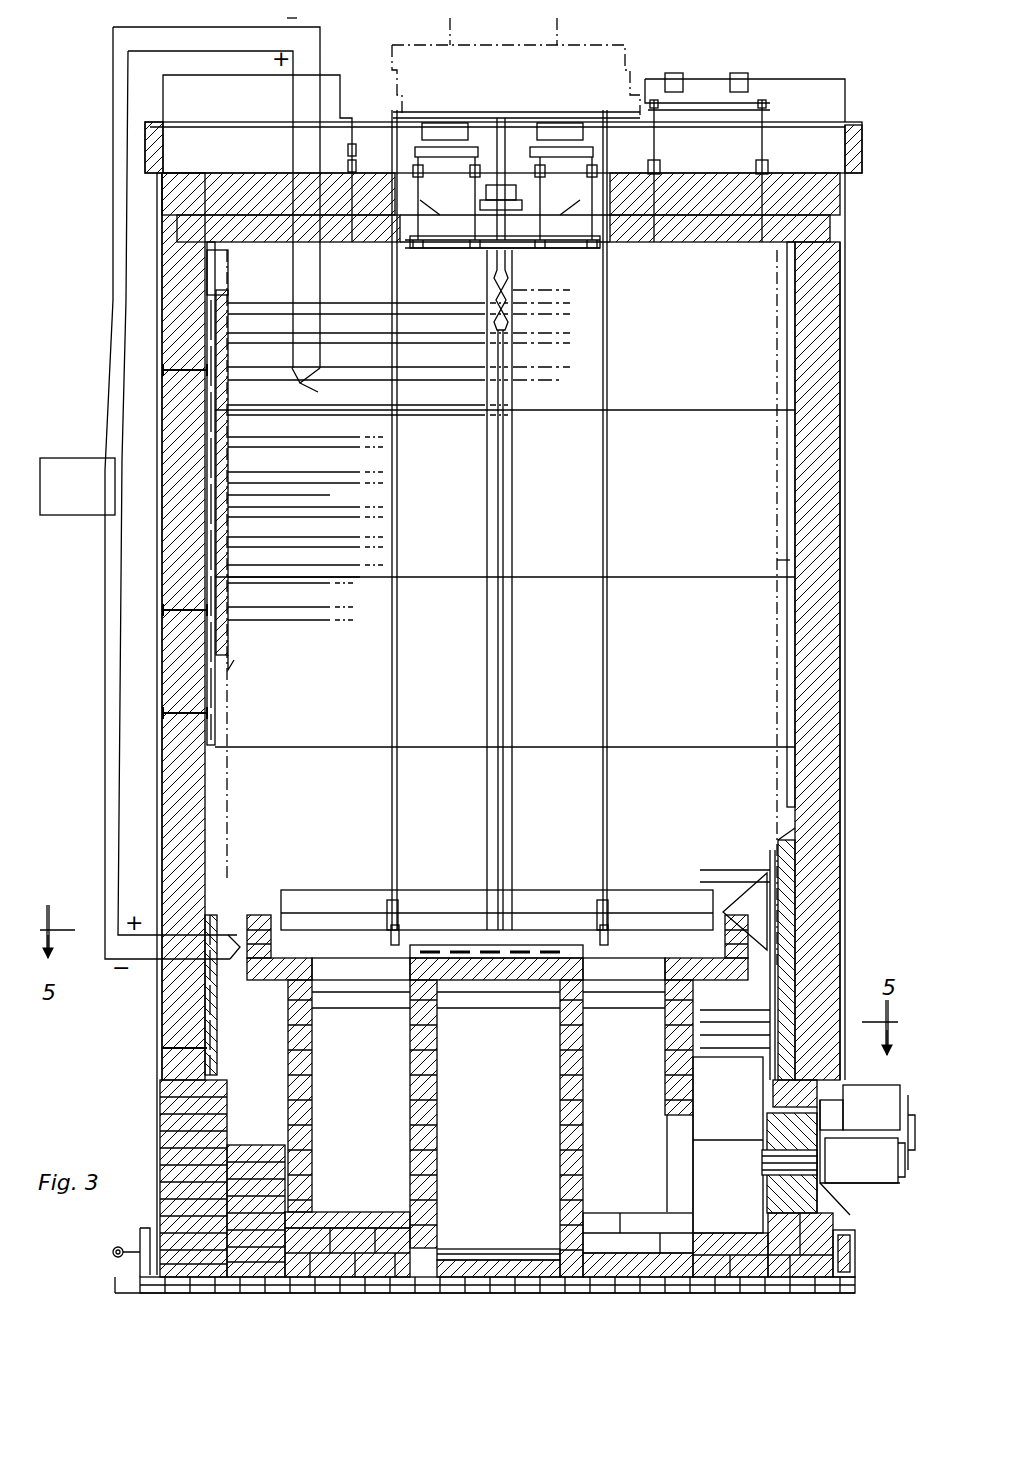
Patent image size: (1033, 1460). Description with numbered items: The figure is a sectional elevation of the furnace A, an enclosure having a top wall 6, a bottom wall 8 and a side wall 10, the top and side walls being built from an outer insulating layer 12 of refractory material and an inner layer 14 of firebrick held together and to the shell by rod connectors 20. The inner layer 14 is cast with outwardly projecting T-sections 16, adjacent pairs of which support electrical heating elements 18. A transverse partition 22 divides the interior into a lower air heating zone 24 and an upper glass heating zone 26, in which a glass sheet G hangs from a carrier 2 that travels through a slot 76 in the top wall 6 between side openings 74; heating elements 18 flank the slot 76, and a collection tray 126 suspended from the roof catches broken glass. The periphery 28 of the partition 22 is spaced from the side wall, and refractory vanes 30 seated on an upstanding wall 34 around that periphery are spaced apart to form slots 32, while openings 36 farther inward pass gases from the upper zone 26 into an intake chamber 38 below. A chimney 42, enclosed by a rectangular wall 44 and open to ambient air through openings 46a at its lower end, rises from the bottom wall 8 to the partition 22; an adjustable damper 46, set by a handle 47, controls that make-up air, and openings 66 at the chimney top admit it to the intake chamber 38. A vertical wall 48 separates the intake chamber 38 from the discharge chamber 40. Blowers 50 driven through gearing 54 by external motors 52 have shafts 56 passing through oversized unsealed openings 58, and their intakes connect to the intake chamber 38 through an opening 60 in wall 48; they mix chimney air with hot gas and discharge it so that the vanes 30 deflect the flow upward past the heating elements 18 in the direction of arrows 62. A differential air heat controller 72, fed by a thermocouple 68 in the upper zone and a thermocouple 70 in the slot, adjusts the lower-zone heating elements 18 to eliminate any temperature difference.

The carrier 2 is at (486, 263).
The top wall 6 is at (705, 177).
The bottom wall 8 is at (325, 1280).
The side wall 10 is at (830, 445).
The outer insulating layer 12 is at (790, 190).
The inner layer 14 is at (708, 235).
The T-sections 16 is at (285, 505).
The electrical heating elements 18 is at (410, 242).
The rod connectors 20 is at (195, 282).
The transverse partition 22 is at (275, 995).
The lower gas or air heating zone 24 is at (250, 1068).
The upper glass heating zone 26 is at (772, 560).
The periphery of the partition 28 is at (243, 980).
The vanes 30 is at (745, 895).
The slots 32 is at (237, 965).
The upstanding wall 34 is at (262, 915).
The openings 36 is at (625, 977).
The intake chamber 38 is at (605, 1105).
The discharge chamber 40 is at (262, 1098).
The chimney 42 is at (455, 1115).
The rectangular wall 44 is at (437, 1088).
The adjustable damper 46 is at (480, 1249).
The openings 46a is at (495, 1285).
The handle 47 is at (110, 1258).
The vertical wall 48 is at (308, 1125).
The blowers 50 is at (705, 1083).
The motors 52 is at (875, 1088).
The gearing 54 is at (905, 1183).
The blower shaft 56 is at (785, 1155).
The opening 58 is at (780, 1172).
The opening 60 is at (675, 1163).
The discharge opening / arrows 62 is at (305, 287).
The openings 66 is at (385, 992).
The thermocouple 68 is at (318, 392).
The thermocouple 70 is at (237, 940).
The differential air heat controller 72 is at (90, 458).
The openings 74 is at (512, 636).
The slot 76 is at (515, 250).
The collection tray 126 is at (355, 890).
The furnace A is at (705, 73).
The glass sheet G is at (512, 472).